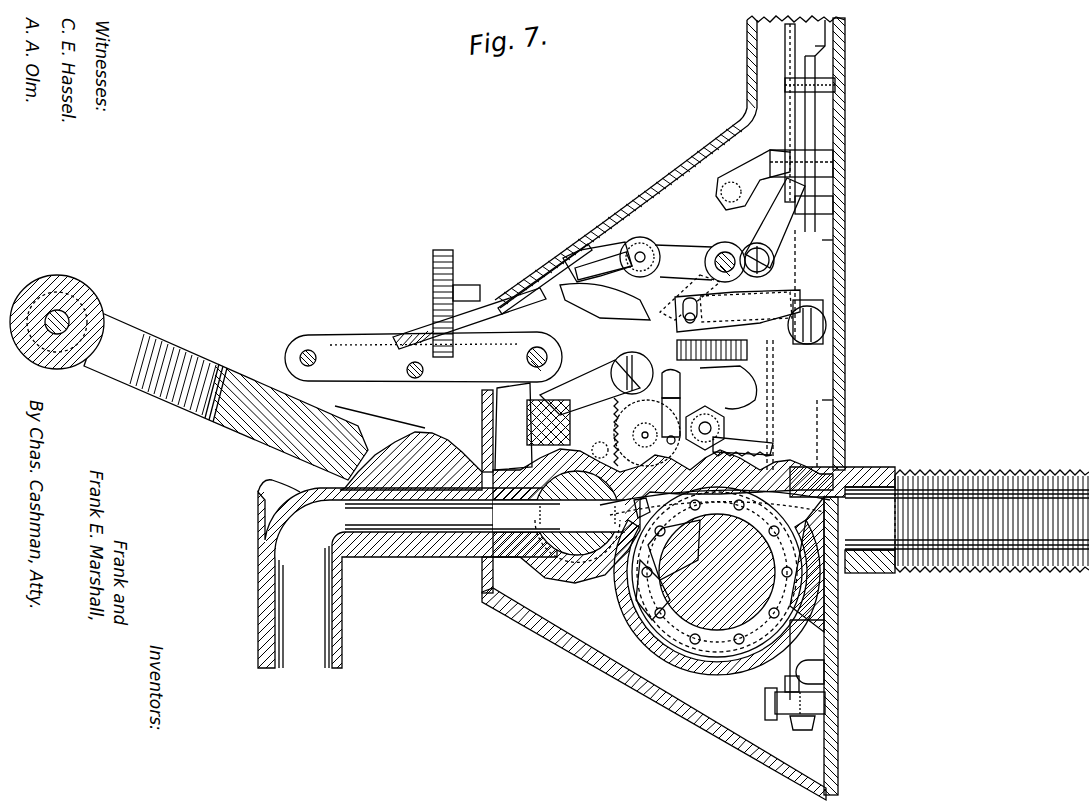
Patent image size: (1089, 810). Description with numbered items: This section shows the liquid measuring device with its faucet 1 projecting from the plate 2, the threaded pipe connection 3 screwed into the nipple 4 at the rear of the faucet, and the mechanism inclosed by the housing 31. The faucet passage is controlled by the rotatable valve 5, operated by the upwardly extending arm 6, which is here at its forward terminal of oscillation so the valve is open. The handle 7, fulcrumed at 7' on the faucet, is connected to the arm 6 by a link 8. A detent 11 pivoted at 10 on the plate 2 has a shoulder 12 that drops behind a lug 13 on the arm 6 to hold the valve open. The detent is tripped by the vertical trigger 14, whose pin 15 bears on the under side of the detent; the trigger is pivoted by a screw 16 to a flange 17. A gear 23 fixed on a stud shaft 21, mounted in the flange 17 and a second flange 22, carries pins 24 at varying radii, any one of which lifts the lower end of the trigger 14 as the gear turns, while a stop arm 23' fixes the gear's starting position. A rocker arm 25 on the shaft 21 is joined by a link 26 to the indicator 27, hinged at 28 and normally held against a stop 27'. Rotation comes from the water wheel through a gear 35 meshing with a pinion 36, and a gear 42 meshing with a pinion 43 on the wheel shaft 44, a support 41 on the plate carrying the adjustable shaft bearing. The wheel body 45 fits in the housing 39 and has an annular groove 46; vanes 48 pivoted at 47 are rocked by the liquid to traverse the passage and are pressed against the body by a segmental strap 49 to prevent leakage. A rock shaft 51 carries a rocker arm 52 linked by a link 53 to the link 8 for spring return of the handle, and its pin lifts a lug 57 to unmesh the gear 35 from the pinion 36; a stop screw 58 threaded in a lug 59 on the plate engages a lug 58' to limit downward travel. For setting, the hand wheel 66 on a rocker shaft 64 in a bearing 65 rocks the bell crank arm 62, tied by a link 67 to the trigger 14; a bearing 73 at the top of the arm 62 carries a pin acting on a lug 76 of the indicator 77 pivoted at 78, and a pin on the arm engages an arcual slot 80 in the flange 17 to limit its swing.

The faucet 1 is at (320, 612).
The plate 2 is at (846, 268).
The threaded pipe connection 3 is at (982, 568).
The nipple 4 is at (884, 468).
The valve 5 is at (566, 566).
The arm 6 is at (565, 448).
The handle 7 is at (189, 377).
The fulcrum 7' is at (408, 443).
The link 8 is at (355, 353).
The pivot 10 is at (826, 327).
The detent 11 is at (676, 410).
The shoulder 12 is at (612, 375).
The lug 13 is at (522, 420).
The trigger 14 is at (600, 264).
The pin 15 is at (680, 382).
The screw 16 is at (615, 290).
The flange 17 is at (743, 442).
The stud shaft 21 is at (720, 420).
The second flange 22 is at (653, 430).
The gear 23 is at (647, 432).
The stop arm 23' is at (599, 442).
The pins 24 is at (715, 481).
The rocker arm 25 is at (846, 400).
The link 26 is at (790, 252).
The indicator 27 is at (853, 126).
The stop 27' is at (846, 80).
The hinge 28 is at (846, 240).
The housing 31 is at (560, 640).
The gear 35 is at (858, 468).
The pinion 36 is at (722, 660).
The water wheel housing 39 is at (772, 650).
The support 41 is at (660, 618).
The gear 42 is at (690, 640).
The pinion 43 is at (648, 600).
The shaft 44 is at (646, 505).
The circular body 45 is at (650, 606).
The annular groove 46 is at (710, 668).
The pivot 47 is at (806, 585).
The vanes 48 is at (792, 622).
The segmental strap 49 is at (806, 672).
The rock shaft 51 is at (714, 246).
The rocker arm 52 is at (648, 240).
The link 53 is at (528, 292).
The lug 57 is at (717, 374).
The stop screw 58 is at (781, 751).
The lug 58' is at (775, 700).
The lug 59 is at (826, 706).
The bell crank lever arm 62 is at (752, 228).
The rocker shaft 64 is at (612, 256).
The bearing 65 is at (553, 287).
The hand wheel 66 is at (436, 262).
The link 67 is at (678, 250).
The bearing 73 is at (700, 320).
The lug 76 is at (748, 162).
The indicator 77 is at (783, 40).
The pivot 78 is at (776, 166).
The arcual slot 80 is at (737, 311).